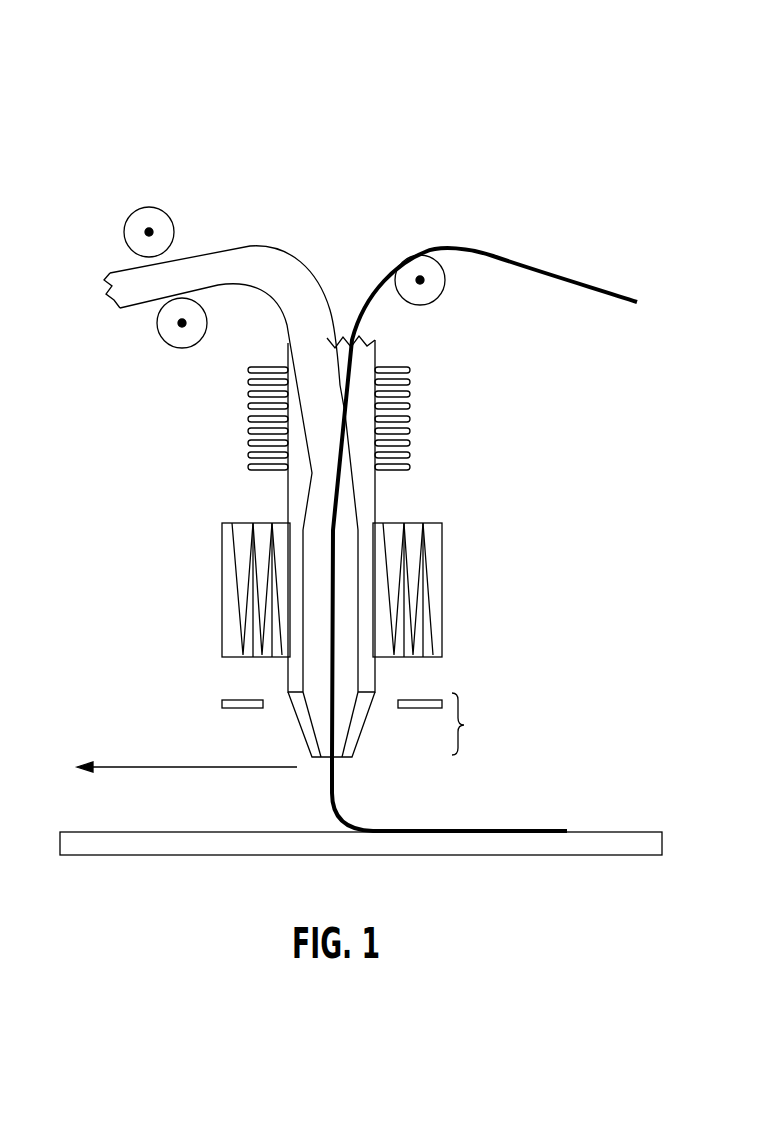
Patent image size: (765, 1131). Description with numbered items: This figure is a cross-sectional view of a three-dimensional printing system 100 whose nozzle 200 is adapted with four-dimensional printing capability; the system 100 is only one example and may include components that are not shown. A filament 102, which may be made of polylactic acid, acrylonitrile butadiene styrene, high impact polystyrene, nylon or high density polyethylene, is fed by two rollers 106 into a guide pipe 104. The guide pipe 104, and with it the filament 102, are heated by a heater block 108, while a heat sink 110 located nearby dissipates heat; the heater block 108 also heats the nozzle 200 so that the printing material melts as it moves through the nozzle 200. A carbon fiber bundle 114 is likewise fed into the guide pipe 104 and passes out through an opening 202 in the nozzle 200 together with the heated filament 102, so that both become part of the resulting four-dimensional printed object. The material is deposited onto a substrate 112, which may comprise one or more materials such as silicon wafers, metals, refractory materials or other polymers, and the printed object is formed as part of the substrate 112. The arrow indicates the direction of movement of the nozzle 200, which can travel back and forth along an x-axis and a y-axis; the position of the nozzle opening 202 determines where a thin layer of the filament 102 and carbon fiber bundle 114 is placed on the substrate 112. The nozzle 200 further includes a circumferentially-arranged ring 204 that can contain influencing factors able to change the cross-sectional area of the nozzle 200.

The 3D printing system 100 is at (353, 26).
The filament 102 is at (268, 247).
The guide pipe 104 is at (376, 497).
The rollers 106 is at (150, 207).
The heater block 108 is at (222, 592).
The heat sink 110 is at (248, 418).
The substrate 112 is at (605, 832).
The carbon fiber bundle 114 is at (494, 256).
The nozzle 200 is at (483, 724).
The opening 202 is at (343, 770).
The circumferentially-arranged ring 204 is at (222, 705).